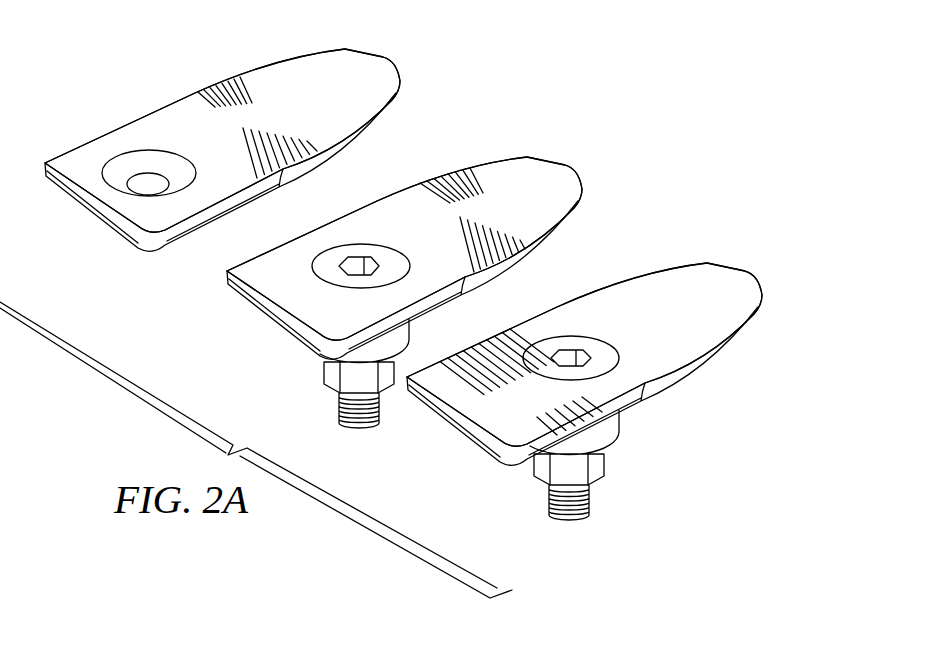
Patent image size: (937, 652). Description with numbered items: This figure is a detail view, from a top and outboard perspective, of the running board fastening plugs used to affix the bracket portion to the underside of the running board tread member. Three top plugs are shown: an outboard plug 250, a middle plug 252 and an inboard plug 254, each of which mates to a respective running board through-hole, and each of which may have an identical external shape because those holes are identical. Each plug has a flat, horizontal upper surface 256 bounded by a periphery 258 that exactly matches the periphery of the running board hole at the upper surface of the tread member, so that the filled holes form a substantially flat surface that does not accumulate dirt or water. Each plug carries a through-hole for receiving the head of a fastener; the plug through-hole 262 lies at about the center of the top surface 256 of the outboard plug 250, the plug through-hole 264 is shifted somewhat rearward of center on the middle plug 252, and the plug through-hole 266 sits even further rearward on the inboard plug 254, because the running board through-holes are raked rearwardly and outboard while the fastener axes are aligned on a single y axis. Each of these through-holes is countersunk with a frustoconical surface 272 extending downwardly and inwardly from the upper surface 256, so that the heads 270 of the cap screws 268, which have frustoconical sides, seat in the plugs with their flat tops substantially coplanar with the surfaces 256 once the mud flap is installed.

The outboard plug 250 is at (764, 304).
The middle plug 252 is at (584, 200).
The inboard plug 254 is at (403, 92).
The upper surface 256 is at (350, 103).
The periphery 258 is at (262, 68).
The plug through-hole 262 is at (600, 350).
The plug through-hole 264 is at (392, 260).
The plug through-hole 266 is at (150, 183).
The cap screw 268 is at (337, 397).
The head 270 is at (330, 262).
The frustoconical surface 272 is at (118, 173).